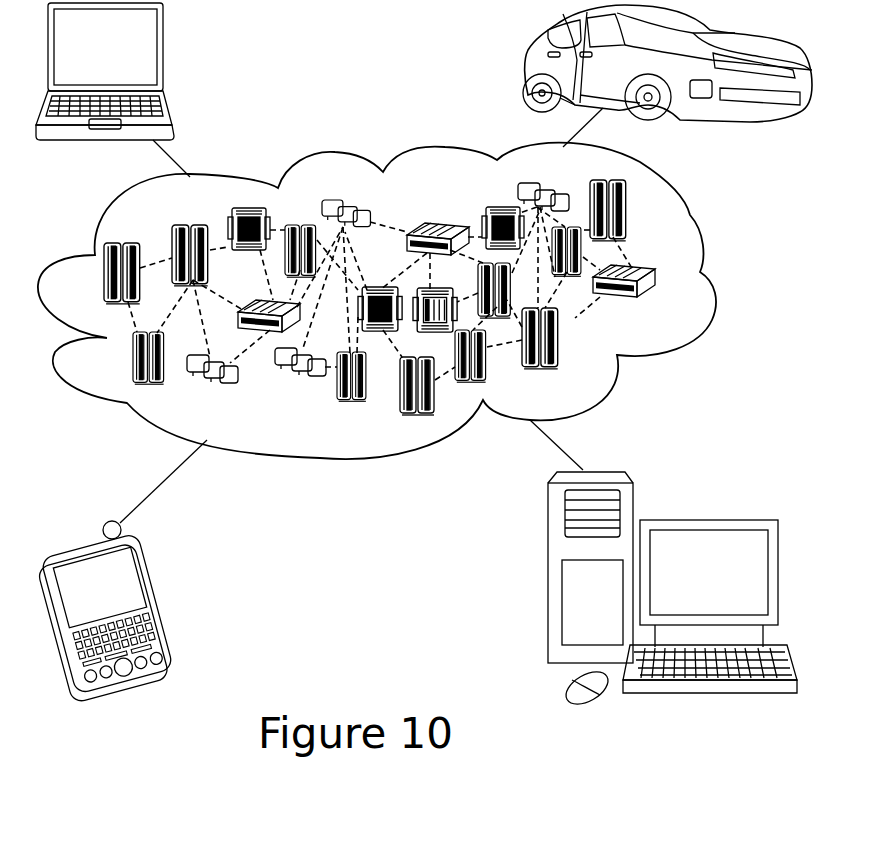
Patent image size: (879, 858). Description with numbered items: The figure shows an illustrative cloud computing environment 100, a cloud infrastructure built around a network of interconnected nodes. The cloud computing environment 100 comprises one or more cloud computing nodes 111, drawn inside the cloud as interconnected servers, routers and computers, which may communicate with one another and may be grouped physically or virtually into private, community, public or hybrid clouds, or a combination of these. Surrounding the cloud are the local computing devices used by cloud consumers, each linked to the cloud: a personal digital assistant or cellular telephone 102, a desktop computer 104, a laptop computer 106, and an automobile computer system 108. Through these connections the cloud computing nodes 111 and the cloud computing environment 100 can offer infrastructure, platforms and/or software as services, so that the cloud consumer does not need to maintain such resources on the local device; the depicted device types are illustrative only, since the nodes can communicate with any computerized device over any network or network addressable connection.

The cloud computing environment 100 is at (411, 301).
The personal digital assistant (PDA) or cellular telephone 102 is at (153, 598).
The desktop computer 104 is at (707, 517).
The laptop computer 106 is at (163, 52).
The automobile computer system 108 is at (523, 66).
The cloud computing nodes 111 is at (666, 307).